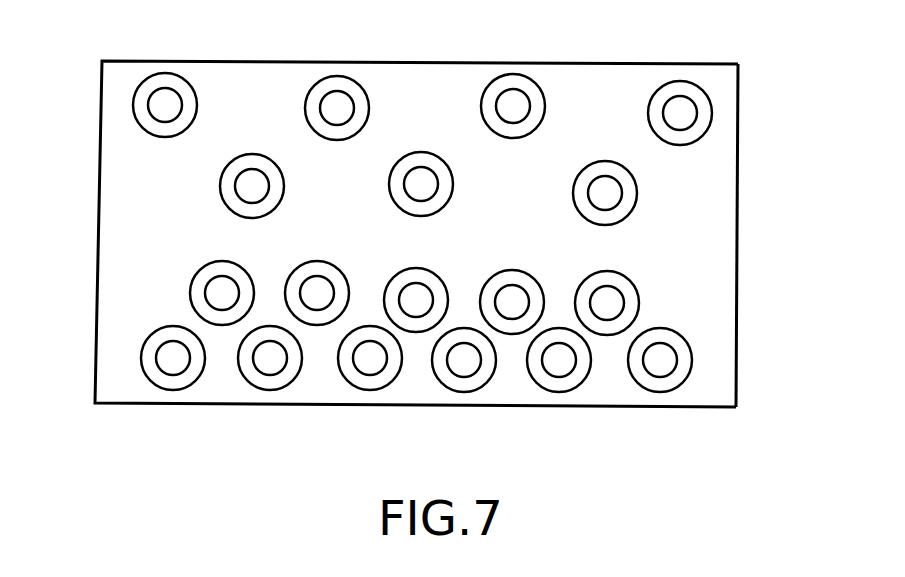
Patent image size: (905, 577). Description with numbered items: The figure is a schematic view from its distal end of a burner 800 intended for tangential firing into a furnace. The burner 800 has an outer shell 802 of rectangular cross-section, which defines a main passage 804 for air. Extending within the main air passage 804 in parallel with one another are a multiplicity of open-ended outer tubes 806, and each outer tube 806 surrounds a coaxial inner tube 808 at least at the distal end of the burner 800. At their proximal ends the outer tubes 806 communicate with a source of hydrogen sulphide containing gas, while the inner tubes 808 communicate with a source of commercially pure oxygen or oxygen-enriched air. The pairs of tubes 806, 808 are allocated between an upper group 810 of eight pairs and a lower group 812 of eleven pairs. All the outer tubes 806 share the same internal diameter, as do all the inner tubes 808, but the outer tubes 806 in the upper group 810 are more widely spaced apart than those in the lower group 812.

The burner 800 is at (440, 247).
The outer shell 802 is at (738, 197).
The main passage 804 is at (248, 240).
The outer tube 806 is at (515, 76).
The inner tube 808 is at (148, 104).
The upper group 810 is at (263, 88).
The lower group 812 is at (428, 391).